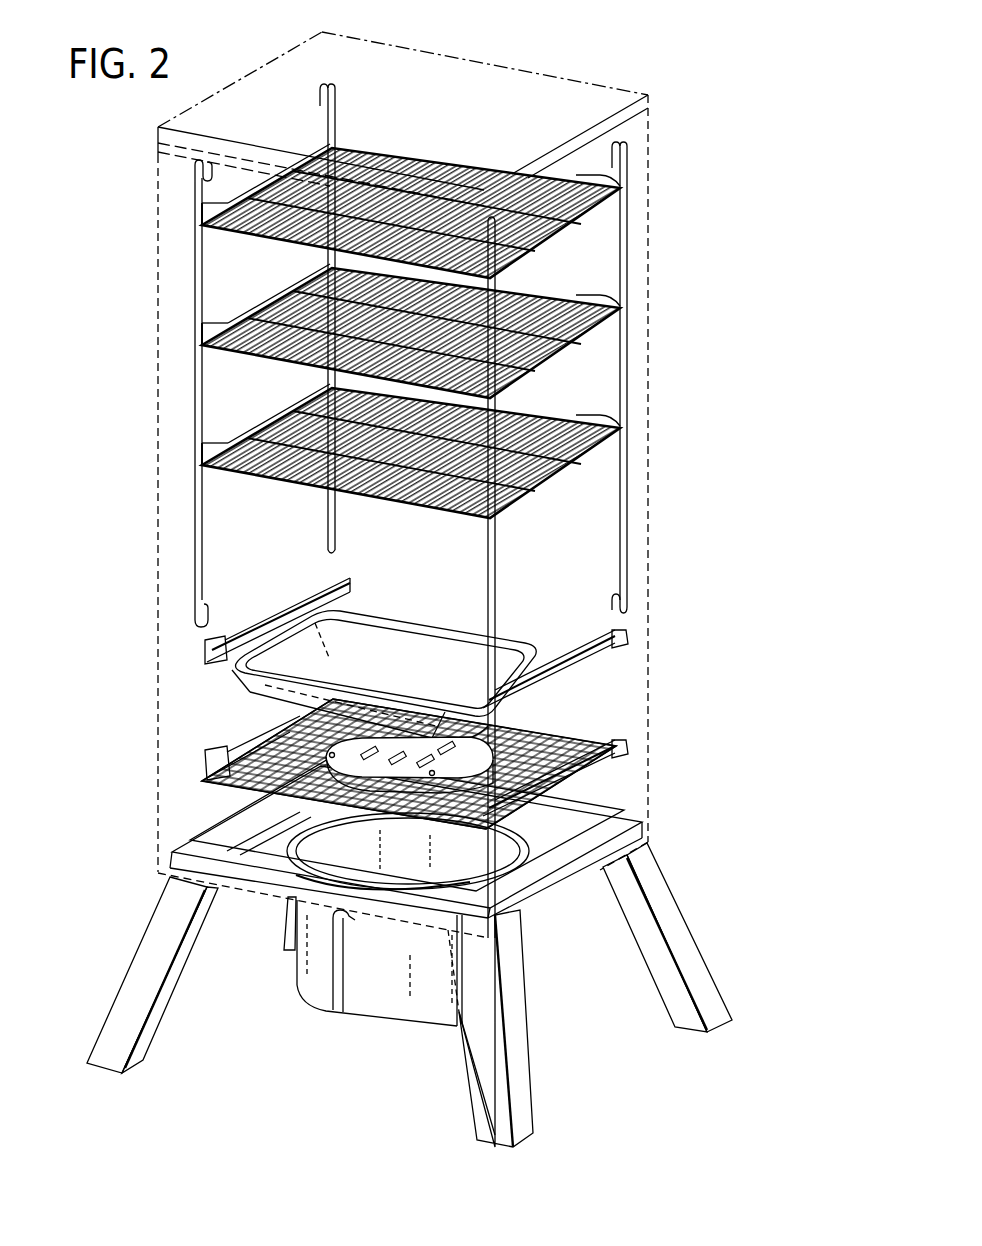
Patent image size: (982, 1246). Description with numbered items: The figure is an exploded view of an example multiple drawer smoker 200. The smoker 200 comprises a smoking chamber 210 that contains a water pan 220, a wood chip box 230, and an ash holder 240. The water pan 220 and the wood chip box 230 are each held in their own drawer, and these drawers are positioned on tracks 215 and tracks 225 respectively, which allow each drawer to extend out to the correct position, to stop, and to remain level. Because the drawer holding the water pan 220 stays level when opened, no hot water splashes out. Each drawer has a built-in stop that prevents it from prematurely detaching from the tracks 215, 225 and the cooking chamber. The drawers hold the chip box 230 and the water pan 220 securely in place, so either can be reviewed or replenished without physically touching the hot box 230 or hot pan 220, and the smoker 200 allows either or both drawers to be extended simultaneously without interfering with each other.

The multiple drawer smoker 200 is at (574, 42).
The smoking chamber 210 is at (462, 552).
The tracks 215 is at (563, 673).
The water pan 220 is at (385, 640).
The tracks 225 is at (573, 777).
The wood chip box 230 is at (290, 736).
The ash holder 240 is at (368, 1010).